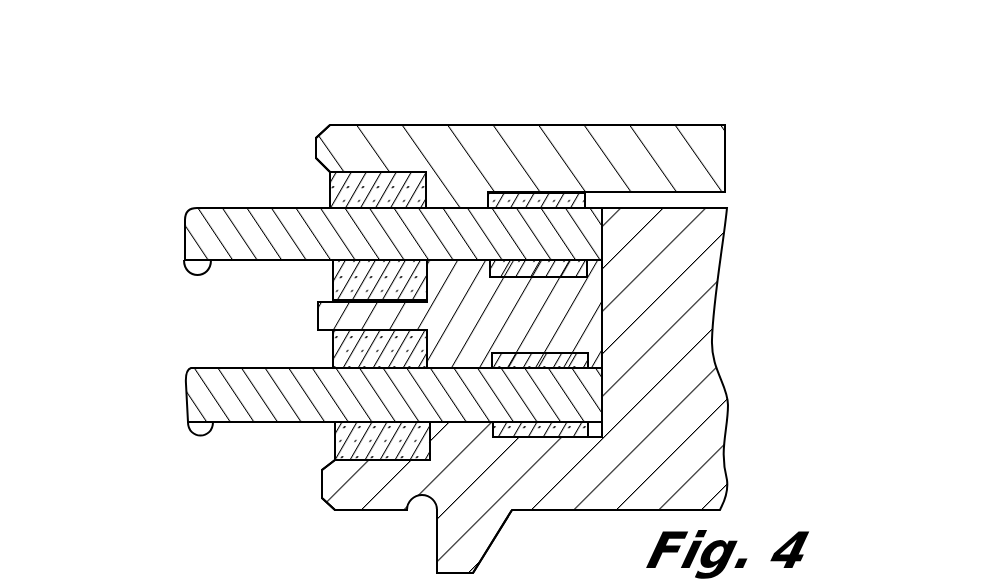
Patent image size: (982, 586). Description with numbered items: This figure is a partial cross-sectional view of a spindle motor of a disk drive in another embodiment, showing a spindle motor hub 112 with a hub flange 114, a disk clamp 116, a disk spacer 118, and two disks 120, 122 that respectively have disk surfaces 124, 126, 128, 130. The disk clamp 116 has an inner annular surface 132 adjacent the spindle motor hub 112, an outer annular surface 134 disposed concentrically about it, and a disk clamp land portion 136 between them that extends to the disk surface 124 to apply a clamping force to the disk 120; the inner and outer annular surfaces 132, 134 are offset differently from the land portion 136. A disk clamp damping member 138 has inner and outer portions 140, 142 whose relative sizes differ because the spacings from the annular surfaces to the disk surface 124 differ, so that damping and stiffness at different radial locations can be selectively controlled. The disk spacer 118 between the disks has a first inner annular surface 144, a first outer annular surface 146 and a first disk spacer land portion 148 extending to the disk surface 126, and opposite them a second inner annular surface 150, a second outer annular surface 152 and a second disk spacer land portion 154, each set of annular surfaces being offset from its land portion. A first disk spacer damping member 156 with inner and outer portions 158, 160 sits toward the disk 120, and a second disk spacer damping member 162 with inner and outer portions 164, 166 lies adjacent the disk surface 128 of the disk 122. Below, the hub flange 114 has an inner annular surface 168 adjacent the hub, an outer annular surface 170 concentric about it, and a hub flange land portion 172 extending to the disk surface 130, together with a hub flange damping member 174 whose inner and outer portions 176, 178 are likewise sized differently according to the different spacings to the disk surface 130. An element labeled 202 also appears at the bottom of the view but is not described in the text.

The spindle motor hub 112 is at (717, 458).
The hub flange 114 is at (327, 488).
The disk clamp 116 is at (556, 133).
The disk spacer 118 is at (557, 286).
The disk 120 is at (188, 226).
The disk 122 is at (188, 392).
The disk surface 124 is at (203, 208).
The disk surface 126 is at (185, 268).
The disk surface 128 is at (200, 368).
The disk surface 130 is at (190, 432).
The inner annular surface 132 is at (575, 186).
The outer annular surface 134 is at (337, 158).
The disk clamp land portion 136 is at (447, 200).
The disk clamp damping member 138 is at (457, 107).
The inner portion 140 is at (537, 192).
The outer portion 142 is at (378, 170).
The first inner annular surface 144 is at (440, 318).
The first outer annular surface 146 is at (336, 307).
The first disk spacer land portion 148 is at (556, 346).
The second inner annular surface 150 is at (590, 361).
The second outer annular surface 152 is at (321, 322).
The second disk spacer land portion 154 is at (465, 351).
The first disk spacer damping member 156 is at (655, 222).
The inner portion 158 is at (462, 274).
The outer portion 160 is at (467, 263).
The second disk spacer damping member 162 is at (587, 403).
The inner portion 164 is at (333, 422).
The outer portion 166 is at (400, 370).
The inner annular surface 168 is at (541, 441).
The outer annular surface 170 is at (387, 464).
The hub flange land portion 172 is at (478, 428).
The hub flange damping member 174 is at (288, 463).
The inner portion 176 is at (333, 422).
The outer portion 178 is at (333, 458).
The mounting projection 202 is at (412, 547).